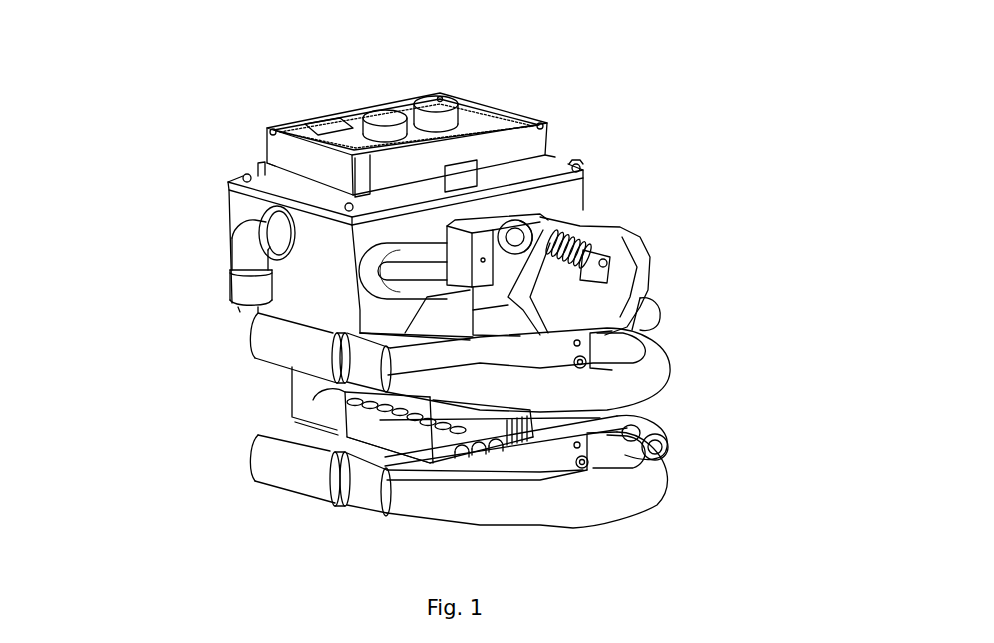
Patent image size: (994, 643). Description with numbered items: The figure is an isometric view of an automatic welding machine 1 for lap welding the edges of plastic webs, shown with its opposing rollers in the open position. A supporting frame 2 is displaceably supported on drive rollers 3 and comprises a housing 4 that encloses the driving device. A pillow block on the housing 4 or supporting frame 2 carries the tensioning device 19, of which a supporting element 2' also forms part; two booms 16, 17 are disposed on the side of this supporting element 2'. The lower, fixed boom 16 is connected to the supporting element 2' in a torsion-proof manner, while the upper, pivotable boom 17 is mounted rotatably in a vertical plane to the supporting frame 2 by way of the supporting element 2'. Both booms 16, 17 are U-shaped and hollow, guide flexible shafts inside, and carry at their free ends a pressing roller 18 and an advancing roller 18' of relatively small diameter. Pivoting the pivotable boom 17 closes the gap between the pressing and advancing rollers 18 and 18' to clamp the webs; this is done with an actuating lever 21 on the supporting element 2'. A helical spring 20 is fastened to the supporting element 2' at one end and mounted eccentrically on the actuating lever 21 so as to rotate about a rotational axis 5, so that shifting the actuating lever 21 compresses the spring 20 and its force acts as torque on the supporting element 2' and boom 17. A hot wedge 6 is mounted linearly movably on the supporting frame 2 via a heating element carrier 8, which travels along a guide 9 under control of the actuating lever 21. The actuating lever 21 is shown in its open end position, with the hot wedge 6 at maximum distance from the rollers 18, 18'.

The automatic welding machine 1 is at (680, 116).
The supporting frame 2 is at (410, 111).
The supporting element 2' is at (654, 276).
The drive rollers 3 is at (662, 435).
The housing 4 is at (330, 238).
The rotational axis 5 is at (607, 262).
The hot wedge 6 is at (385, 425).
The heating element carrier 8 is at (438, 312).
The guide 9 is at (375, 270).
The lower, fixed boom 16 is at (607, 497).
The upper, pivotable boom 17 is at (617, 383).
The pressing roller 18 is at (219, 348).
The advancing roller 18' is at (216, 470).
The tensioning device 19 is at (490, 208).
The helical spring 20 is at (580, 247).
The actuating lever 21 is at (645, 313).